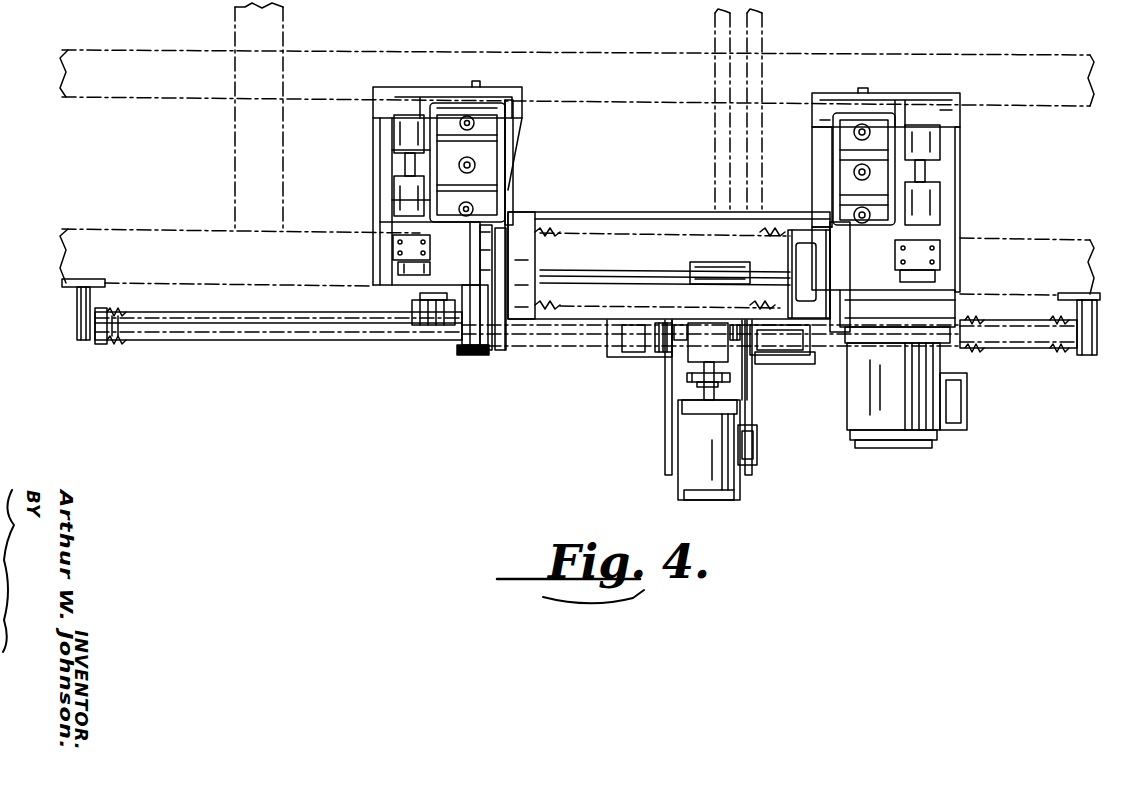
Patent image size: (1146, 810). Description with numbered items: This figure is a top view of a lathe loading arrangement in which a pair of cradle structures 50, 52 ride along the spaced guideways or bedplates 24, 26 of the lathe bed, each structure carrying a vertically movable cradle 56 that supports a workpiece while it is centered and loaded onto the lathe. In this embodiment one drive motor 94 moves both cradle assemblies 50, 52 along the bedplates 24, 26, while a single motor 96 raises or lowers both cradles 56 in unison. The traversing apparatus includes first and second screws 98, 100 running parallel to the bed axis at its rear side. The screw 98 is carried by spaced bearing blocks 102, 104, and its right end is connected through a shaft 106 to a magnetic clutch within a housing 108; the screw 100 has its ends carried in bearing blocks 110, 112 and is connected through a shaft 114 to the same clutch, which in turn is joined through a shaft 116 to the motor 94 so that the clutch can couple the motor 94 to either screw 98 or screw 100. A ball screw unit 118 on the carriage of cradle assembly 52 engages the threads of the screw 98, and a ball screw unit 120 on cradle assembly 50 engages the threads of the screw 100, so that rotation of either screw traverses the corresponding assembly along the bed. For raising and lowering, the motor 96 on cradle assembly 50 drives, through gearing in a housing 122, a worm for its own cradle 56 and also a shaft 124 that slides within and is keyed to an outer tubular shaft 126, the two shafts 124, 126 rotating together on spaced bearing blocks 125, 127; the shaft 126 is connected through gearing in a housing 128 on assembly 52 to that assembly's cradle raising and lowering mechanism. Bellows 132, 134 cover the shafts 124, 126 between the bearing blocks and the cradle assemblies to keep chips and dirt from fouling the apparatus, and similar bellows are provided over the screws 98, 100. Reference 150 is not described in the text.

The guideway 24 is at (652, 65).
The guideway 26 is at (157, 236).
The cradle structure 50 is at (962, 163).
The cradle structure 52 is at (389, 163).
The cradle 56 is at (483, 165).
The drive motor 94 is at (690, 466).
The motor 96 is at (850, 396).
The first screw 98 is at (278, 327).
The second screw 100 is at (1010, 328).
The bearing block 102 is at (88, 340).
The bearing block 104 is at (630, 343).
The shaft 106 is at (667, 330).
The clutch housing 108 is at (693, 357).
The bearing block 110 is at (1085, 355).
The bearing block 112 is at (795, 364).
The shaft 114 is at (735, 328).
The shaft 116 is at (731, 378).
The ball screw unit 118 is at (472, 357).
The ball screw unit 120 is at (957, 357).
The gearing housing 122 is at (940, 275).
The shaft 124 is at (700, 265).
The bearing block 125 is at (528, 248).
The outer tubular shaft 126 is at (760, 255).
The bearing block 127 is at (808, 290).
The gearing housing 128 is at (392, 264).
The bellows 132 is at (548, 235).
The bellows 134 is at (810, 322).
The beam end bracket 150 is at (506, 225).